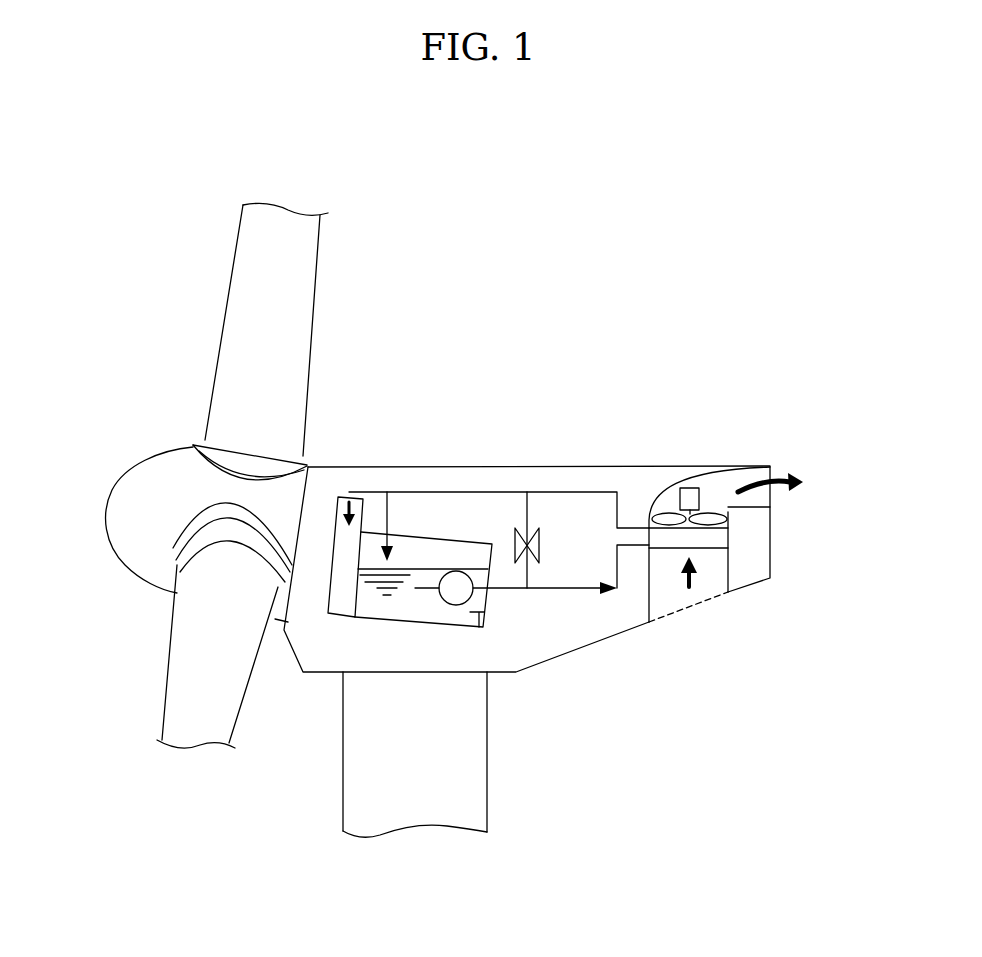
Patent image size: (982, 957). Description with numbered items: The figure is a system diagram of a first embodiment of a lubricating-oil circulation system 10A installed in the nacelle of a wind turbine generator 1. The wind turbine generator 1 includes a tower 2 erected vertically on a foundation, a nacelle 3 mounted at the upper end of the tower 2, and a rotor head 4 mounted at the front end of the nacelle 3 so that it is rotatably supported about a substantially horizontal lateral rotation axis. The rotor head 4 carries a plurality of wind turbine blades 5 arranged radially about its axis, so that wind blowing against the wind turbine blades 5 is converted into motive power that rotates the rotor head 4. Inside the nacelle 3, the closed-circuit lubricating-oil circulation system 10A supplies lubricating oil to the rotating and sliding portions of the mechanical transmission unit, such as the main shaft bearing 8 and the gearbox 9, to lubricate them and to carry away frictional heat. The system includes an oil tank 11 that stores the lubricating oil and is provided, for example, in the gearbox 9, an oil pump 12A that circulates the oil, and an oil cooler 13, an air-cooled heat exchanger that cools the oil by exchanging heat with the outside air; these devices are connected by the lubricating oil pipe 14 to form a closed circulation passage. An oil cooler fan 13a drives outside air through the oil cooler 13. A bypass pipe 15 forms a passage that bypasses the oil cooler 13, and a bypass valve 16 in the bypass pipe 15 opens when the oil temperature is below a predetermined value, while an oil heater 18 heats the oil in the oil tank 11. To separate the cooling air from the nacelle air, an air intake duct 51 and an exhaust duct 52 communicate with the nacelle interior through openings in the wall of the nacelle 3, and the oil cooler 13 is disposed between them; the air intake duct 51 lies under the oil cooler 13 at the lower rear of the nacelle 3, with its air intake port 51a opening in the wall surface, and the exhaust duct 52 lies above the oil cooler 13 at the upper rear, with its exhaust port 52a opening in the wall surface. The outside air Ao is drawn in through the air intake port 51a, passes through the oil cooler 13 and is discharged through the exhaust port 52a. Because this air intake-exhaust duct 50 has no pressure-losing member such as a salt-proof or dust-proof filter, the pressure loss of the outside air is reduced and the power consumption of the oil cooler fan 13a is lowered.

The wind turbine generator 1 is at (697, 295).
The wind turbine tower 2 is at (490, 795).
The nacelle 3 is at (579, 663).
The rotor head 4 is at (110, 545).
The wind turbine blades 5 is at (315, 270).
The main shaft bearing 8 is at (330, 612).
The gearbox 9 is at (472, 541).
The lubricating-oil circulation system 10A is at (486, 468).
The oil tank 11 is at (415, 613).
The oil pump 12A is at (453, 606).
The oil cooler 13 is at (730, 537).
The oil cooler fan 13a is at (665, 510).
The lubricating oil pipe 14 is at (540, 593).
The bypass pipe 15 is at (527, 508).
The bypass valve 16 is at (540, 548).
The oil heater 18 is at (483, 626).
The air intake-exhaust duct 50 is at (746, 572).
The air intake duct 51 is at (648, 593).
The air intake port 51a is at (703, 603).
The exhaust duct 52 is at (690, 487).
The exhaust port 52a is at (776, 468).
The outside air Ao is at (748, 483).